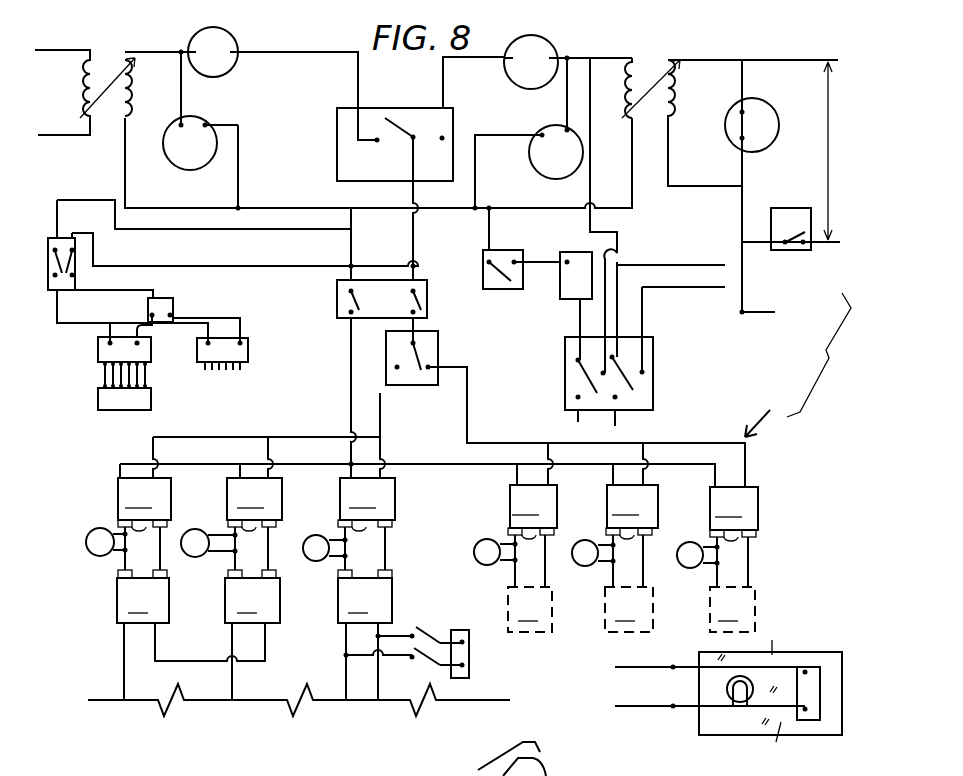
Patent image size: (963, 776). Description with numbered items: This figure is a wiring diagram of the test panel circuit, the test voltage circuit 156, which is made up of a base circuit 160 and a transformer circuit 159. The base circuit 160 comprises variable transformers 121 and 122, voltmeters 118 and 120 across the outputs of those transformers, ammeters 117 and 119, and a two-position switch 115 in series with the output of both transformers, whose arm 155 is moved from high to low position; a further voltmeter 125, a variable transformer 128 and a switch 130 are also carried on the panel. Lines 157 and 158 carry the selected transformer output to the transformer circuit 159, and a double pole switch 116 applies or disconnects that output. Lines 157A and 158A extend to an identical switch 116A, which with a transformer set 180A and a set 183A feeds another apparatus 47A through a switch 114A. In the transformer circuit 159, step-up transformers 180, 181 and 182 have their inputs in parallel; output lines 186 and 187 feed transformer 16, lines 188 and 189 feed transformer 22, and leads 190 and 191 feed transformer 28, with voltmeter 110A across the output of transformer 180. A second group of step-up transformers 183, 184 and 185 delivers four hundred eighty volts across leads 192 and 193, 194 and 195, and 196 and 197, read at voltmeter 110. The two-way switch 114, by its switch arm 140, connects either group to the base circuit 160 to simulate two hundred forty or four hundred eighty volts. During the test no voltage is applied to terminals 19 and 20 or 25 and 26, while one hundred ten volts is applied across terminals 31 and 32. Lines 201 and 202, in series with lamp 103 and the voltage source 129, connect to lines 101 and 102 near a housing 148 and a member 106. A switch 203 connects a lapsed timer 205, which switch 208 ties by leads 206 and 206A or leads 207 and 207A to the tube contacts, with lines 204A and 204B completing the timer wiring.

The transformer 16 is at (334, 601).
The terminal 19 is at (124, 669).
The terminal 20 is at (156, 648).
The transformer 22 is at (439, 601).
The terminal 25 is at (230, 703).
The terminal 26 is at (268, 648).
The transformer 28 is at (546, 601).
The terminal 31 is at (346, 638).
The terminal 32 is at (378, 662).
The apparatus 47A is at (151, 400).
The line 101 is at (646, 666).
The line 102 is at (658, 704).
The test light 103 is at (754, 693).
The housing 106 is at (524, 759).
The voltmeter 110 is at (705, 544).
The voltmeter 110A is at (104, 530).
The two-way switch 114 is at (565, 406).
The relay switch 114A is at (173, 312).
The two-position switch 115 is at (337, 128).
The double pole switch 116 is at (337, 297).
The switch 116A is at (80, 270).
The ammeter 117 is at (227, 72).
The voltmeter 118 is at (212, 144).
The ammeter 119 is at (552, 56).
The voltmeter 120 is at (551, 160).
The variable transformer 121 is at (101, 138).
The variable transformer 122 is at (642, 59).
The voltmeter 125 is at (743, 125).
The variable transformer 128 is at (760, 312).
The voltage source 129 is at (483, 676).
The switch 130 is at (790, 256).
The switch arm 140 is at (420, 356).
The indicator unit 148 is at (826, 726).
The arm 155 is at (393, 119).
The test voltage circuit 156 is at (825, 355).
The line 157 is at (348, 244).
The line 157A is at (124, 229).
The line 158 is at (415, 242).
The line 158A is at (246, 264).
The transformer circuit 159 is at (773, 416).
The base circuit 160 is at (802, 279).
The step-up transformer 180 is at (144, 484).
The set of transformers 180A is at (98, 346).
The step-up transformer 181 is at (254, 484).
The step-up transformer 182 is at (366, 504).
The step-up transformer 183 is at (532, 491).
The set of transformers 183A is at (245, 347).
The step-up transformer 184 is at (632, 491).
The step-up transformer 185 is at (734, 514).
The output line 186 is at (125, 562).
The output line 187 is at (238, 570).
The line 188 is at (235, 534).
The line 189 is at (268, 541).
The output lead 190 is at (345, 564).
The output lead 191 is at (399, 566).
The output lead 192 is at (515, 570).
The output lead 193 is at (553, 566).
The output lead 194 is at (613, 571).
The output lead 195 is at (643, 566).
The output lead 196 is at (717, 574).
The output lead 197 is at (748, 566).
The line 201 is at (696, 704).
The line 202 is at (686, 666).
The switch 203 is at (518, 290).
The conductor 204A is at (543, 262).
The conductor 204B is at (620, 243).
The lapsed timer 205 is at (565, 290).
The lead 206 is at (576, 422).
The lead 206A is at (617, 420).
The lead 207 is at (680, 262).
The lead 207A is at (668, 288).
The switch 208 is at (646, 370).